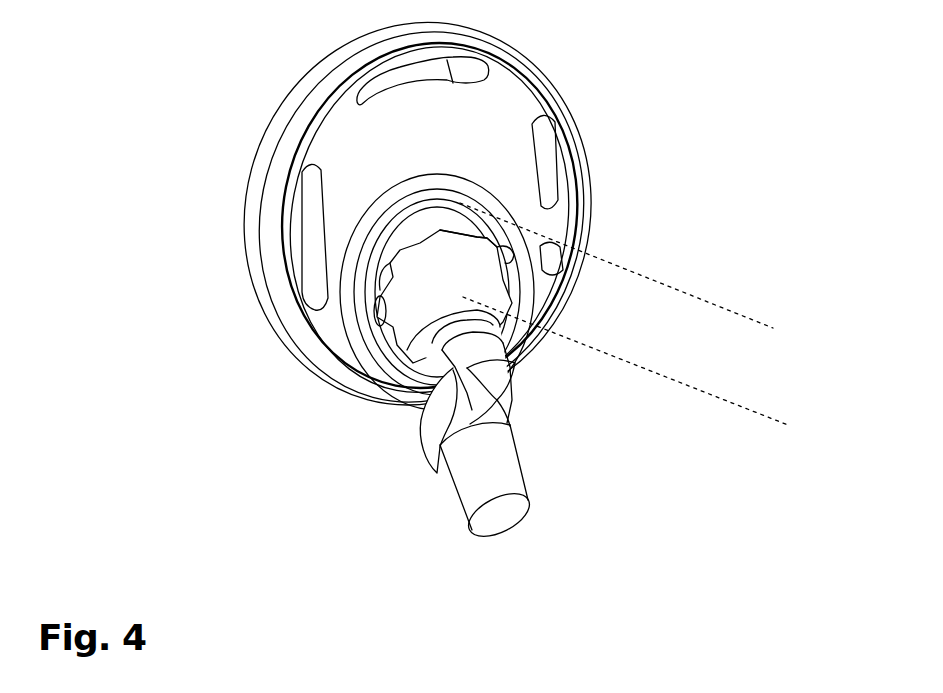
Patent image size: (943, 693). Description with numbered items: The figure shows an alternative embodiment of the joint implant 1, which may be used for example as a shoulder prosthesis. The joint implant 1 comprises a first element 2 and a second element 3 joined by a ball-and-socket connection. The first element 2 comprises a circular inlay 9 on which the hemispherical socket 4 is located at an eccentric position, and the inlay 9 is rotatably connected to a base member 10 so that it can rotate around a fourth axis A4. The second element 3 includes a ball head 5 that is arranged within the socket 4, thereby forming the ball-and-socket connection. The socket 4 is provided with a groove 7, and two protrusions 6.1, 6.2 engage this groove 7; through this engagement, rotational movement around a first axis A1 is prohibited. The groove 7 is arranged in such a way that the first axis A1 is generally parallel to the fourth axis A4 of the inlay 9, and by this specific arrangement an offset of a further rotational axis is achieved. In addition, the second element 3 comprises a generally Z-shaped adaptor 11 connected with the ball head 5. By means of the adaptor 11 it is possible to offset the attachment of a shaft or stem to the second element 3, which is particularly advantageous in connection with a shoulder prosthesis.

The joint implant 1 is at (196, 118).
The first element 2 is at (253, 319).
The second element 3 is at (519, 357).
The hemispherical socket 4 is at (495, 224).
The ball head 5 is at (475, 257).
The first protrusion 6.1 is at (548, 325).
The second protrusion 6.2 is at (383, 305).
The groove 7 is at (540, 282).
The circular inlay 9 is at (510, 105).
The base member 10 is at (248, 210).
The Z-shaped adaptor 11 is at (452, 462).
The first axis A1 is at (763, 415).
The fourth axis A4 is at (758, 323).